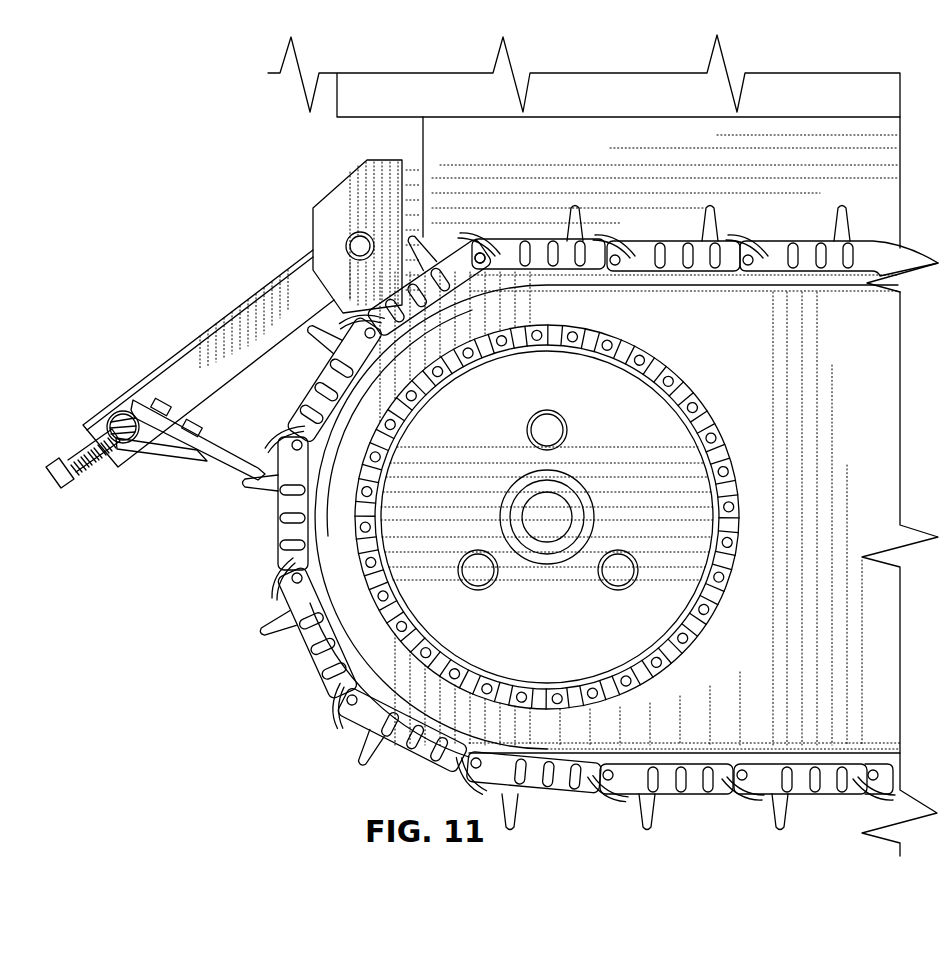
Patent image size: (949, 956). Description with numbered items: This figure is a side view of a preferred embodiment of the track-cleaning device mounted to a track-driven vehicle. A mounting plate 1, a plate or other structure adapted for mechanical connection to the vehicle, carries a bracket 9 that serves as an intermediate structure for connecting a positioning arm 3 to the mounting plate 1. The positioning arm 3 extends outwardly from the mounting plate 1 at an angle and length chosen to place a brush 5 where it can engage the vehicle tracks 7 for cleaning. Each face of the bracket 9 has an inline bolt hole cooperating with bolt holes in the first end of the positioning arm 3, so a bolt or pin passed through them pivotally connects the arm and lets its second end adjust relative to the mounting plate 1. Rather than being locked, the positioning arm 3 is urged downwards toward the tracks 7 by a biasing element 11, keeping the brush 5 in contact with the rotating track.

The mounting plate 1 is at (407, 149).
The positioning arm 3 is at (247, 300).
The brush 5 is at (240, 467).
The vehicle tracks 7 is at (270, 628).
The bracket 9 is at (320, 233).
The biasing element 11 is at (53, 466).